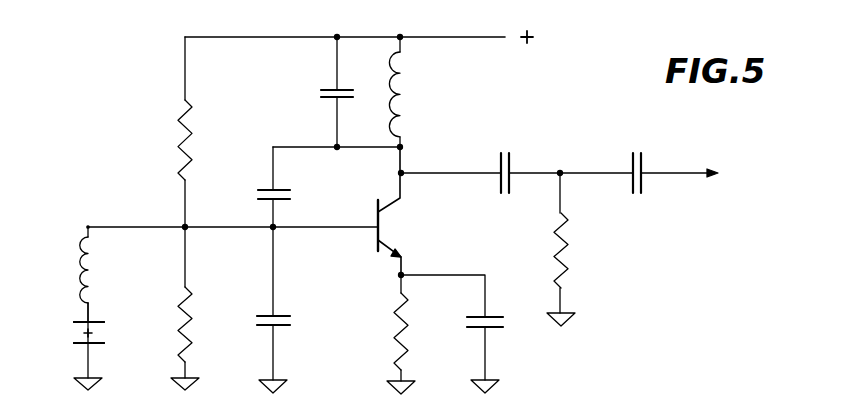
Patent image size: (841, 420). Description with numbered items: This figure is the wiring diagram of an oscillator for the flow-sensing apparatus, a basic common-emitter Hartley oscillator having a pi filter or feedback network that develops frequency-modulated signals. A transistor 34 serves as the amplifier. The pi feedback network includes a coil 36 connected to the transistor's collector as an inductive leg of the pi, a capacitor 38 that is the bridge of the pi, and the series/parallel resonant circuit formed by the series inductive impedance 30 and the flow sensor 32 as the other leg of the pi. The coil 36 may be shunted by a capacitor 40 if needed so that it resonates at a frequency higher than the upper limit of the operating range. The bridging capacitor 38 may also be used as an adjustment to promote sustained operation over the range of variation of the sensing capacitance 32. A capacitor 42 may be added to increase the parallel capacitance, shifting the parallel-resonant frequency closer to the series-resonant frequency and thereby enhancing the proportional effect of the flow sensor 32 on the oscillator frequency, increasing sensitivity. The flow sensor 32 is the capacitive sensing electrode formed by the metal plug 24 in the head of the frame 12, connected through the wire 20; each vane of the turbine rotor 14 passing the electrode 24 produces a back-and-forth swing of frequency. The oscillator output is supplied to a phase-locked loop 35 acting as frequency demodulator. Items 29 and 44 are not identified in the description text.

The frame 12 is at (96, 362).
The turbine rotor 14 is at (104, 331).
The wire 20 is at (88, 227).
The metal plug 24 is at (99, 320).
The connection node 29 is at (86, 307).
The series inductive impedance 30 is at (81, 262).
The flow sensor 32 is at (68, 312).
The transistor 34 is at (366, 244).
The phase-locked loop 35 is at (727, 179).
The coil 36 is at (404, 101).
The capacitor 38 is at (254, 195).
The capacitor 40 is at (319, 93).
The capacitor 42 is at (291, 325).
The coupling capacitor 44 is at (536, 165).